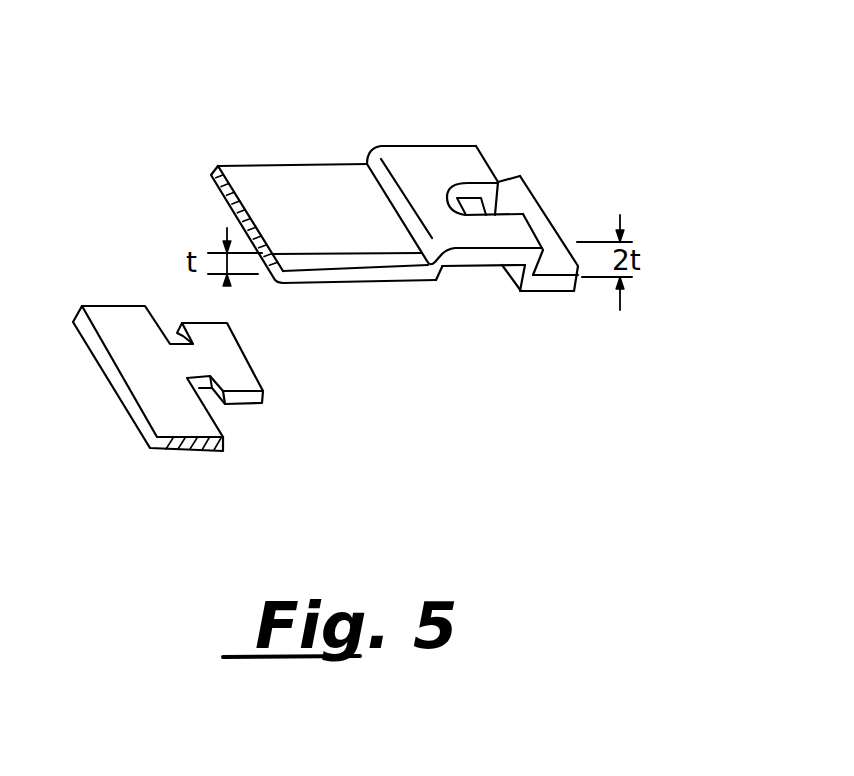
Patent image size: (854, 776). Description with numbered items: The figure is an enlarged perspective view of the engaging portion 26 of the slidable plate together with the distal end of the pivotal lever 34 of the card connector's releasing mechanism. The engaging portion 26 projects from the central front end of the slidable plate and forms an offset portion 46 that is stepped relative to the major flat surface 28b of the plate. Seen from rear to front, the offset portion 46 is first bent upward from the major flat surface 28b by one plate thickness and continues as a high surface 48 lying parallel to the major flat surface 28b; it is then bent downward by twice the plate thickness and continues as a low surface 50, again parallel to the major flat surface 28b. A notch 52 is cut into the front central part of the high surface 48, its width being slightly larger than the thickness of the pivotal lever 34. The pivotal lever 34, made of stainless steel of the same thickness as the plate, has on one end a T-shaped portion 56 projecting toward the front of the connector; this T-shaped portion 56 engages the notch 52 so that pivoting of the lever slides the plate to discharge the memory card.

The engaging portion 26 is at (294, 128).
The major flat surface 28b is at (270, 206).
The notch 52 is at (447, 195).
The high surface 48 is at (425, 160).
The low surface 50 is at (508, 204).
The offset portion 46 is at (468, 296).
The pivotal lever 34 is at (132, 413).
The T-shaped portion 56 is at (250, 413).